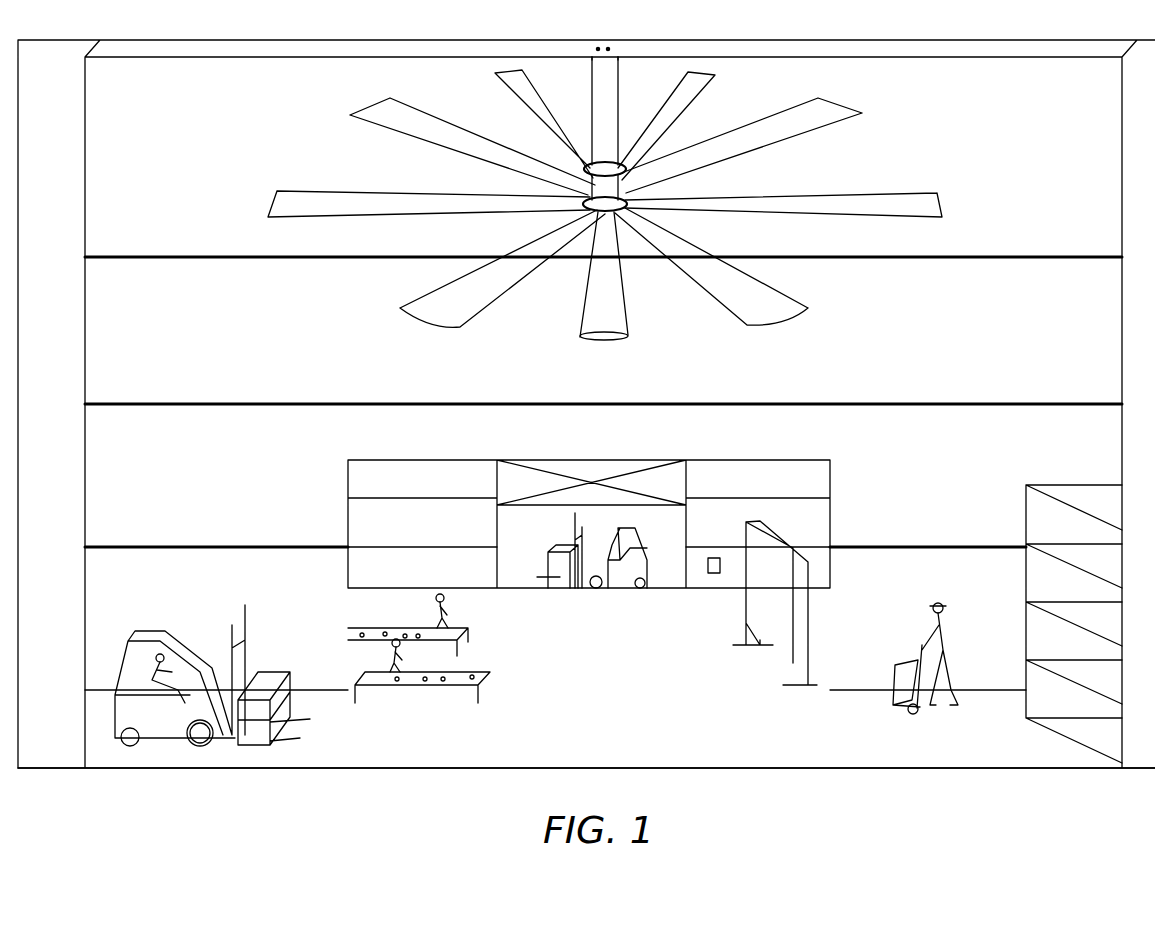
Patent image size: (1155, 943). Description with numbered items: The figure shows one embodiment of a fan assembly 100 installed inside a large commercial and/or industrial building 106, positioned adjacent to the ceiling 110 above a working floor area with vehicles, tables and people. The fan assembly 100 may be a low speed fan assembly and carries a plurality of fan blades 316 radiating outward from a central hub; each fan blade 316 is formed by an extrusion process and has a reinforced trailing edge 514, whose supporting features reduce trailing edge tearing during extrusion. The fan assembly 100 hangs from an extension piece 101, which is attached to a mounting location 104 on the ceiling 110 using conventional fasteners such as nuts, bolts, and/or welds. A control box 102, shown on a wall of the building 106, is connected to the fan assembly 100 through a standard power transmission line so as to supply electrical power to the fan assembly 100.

The fan assembly 100 is at (629, 209).
The extension piece 101 is at (619, 112).
The control box 102 is at (712, 575).
The mounting location 104 is at (596, 49).
The large commercial and/or industrial building 106 is at (631, 701).
The ceiling 110 is at (330, 57).
The fan blade 316 is at (948, 198).
The reinforced trailing edge 514 is at (803, 326).